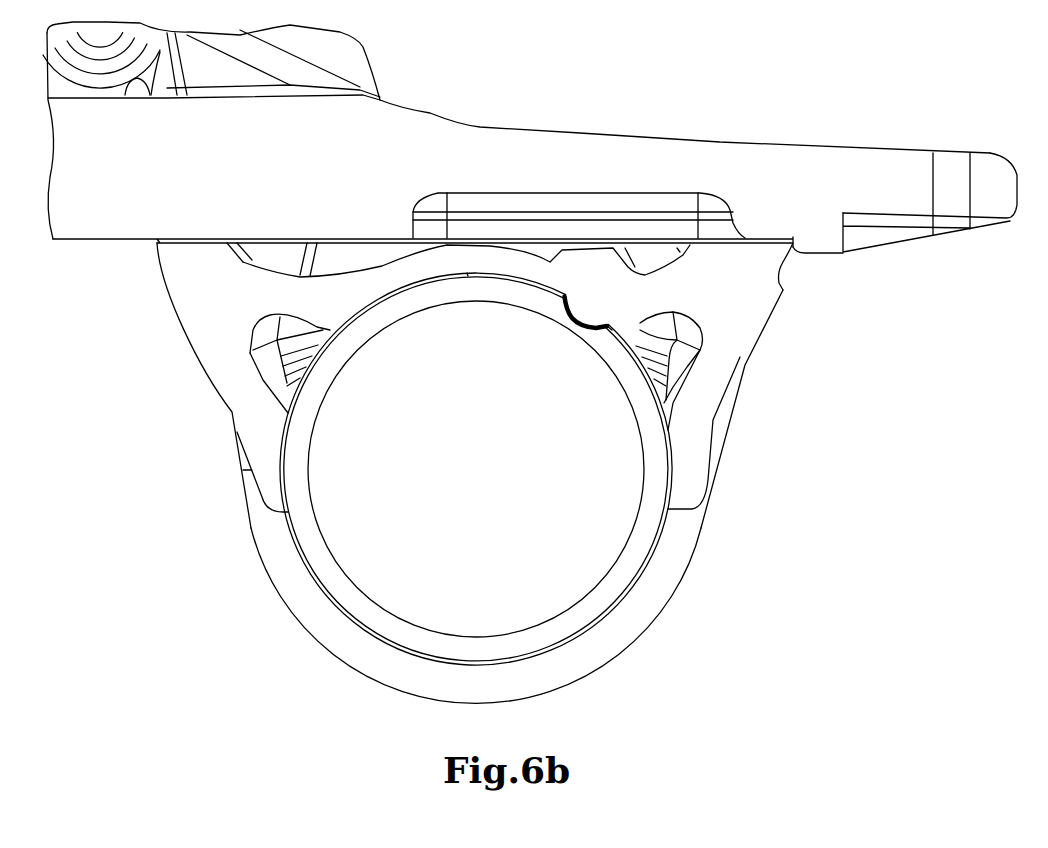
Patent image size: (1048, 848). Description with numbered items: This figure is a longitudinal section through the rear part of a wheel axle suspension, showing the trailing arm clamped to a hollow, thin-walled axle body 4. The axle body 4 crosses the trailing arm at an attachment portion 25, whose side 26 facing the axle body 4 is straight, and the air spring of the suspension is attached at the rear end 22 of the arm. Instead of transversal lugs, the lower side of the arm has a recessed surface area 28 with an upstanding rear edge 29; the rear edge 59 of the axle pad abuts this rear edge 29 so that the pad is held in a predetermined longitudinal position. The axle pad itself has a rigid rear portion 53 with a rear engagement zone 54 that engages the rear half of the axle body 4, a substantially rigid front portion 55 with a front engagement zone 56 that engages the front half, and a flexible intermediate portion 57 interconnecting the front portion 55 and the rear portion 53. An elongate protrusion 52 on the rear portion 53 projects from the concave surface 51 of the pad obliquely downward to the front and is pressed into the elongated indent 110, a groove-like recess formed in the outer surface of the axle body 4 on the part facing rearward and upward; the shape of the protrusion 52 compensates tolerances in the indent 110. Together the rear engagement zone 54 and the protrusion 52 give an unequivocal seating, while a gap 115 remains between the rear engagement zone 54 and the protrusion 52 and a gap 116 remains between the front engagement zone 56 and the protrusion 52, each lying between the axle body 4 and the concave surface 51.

The axle body 4 is at (463, 643).
The rear end 22 is at (850, 168).
The attachment portion 25 is at (397, 180).
The side 26 is at (377, 258).
The recessed surface area 28 is at (677, 248).
The upstanding rear edge 29 is at (817, 227).
The concave surface 51 is at (428, 300).
The elongate protrusion 52 is at (588, 312).
The rear portion 53 is at (723, 307).
The rear engagement zone 54 is at (670, 437).
The front portion 55 is at (230, 374).
The front engagement zone 56 is at (275, 472).
The flexible intermediate portion 57 is at (520, 267).
The rear edge 59 is at (783, 290).
The elongated indent 110 is at (573, 338).
The gap 115 is at (667, 340).
The gap 116 is at (467, 273).